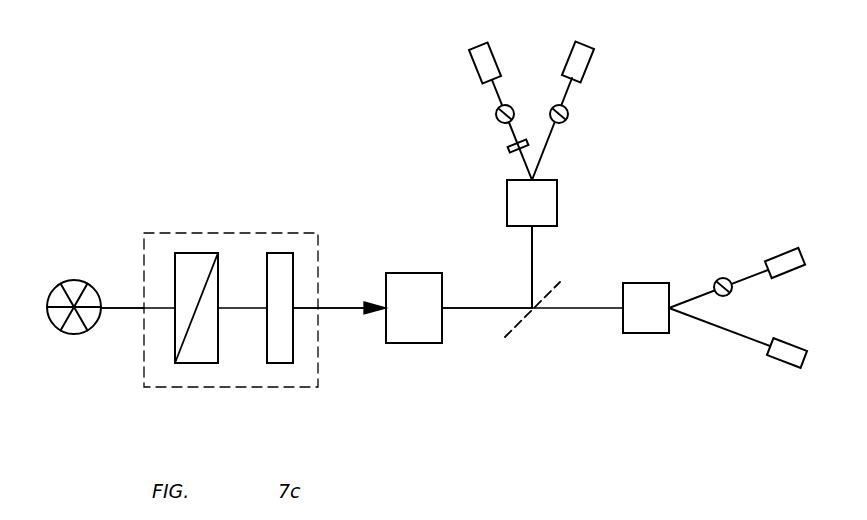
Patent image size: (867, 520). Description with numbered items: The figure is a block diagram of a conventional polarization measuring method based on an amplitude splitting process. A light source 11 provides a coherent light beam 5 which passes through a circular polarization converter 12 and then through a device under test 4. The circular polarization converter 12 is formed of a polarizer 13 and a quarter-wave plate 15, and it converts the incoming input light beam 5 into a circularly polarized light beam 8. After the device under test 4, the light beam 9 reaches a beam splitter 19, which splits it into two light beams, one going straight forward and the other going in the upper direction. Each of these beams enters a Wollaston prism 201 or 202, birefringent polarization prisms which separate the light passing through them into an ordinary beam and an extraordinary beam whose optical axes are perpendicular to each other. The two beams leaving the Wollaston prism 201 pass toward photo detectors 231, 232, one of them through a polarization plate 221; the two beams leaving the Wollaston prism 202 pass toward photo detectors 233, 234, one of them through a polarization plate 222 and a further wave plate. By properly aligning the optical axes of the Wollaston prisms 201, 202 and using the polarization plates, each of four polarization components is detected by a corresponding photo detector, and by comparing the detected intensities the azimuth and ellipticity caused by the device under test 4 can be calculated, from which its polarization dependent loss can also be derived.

The light source 11 is at (74, 281).
The coherent light beam 5 is at (115, 312).
The circular polarization converter 12 is at (260, 231).
The polarizer 13 is at (193, 252).
The quarter-wave plate 15 is at (278, 252).
The circularly polarized light beam 8 is at (362, 313).
The device under test 4 is at (397, 272).
The output beam 9 is at (483, 311).
The beam splitter 19 is at (517, 324).
The Wollaston prism 202 is at (553, 180).
The polarization plate 222 is at (498, 108).
The photo detector 233 is at (488, 43).
The photo detector 234 is at (580, 42).
The Wollaston prism 201 is at (632, 334).
The polarization plate 221 is at (725, 278).
The photo detector 231 is at (773, 253).
The photo detector 232 is at (773, 342).